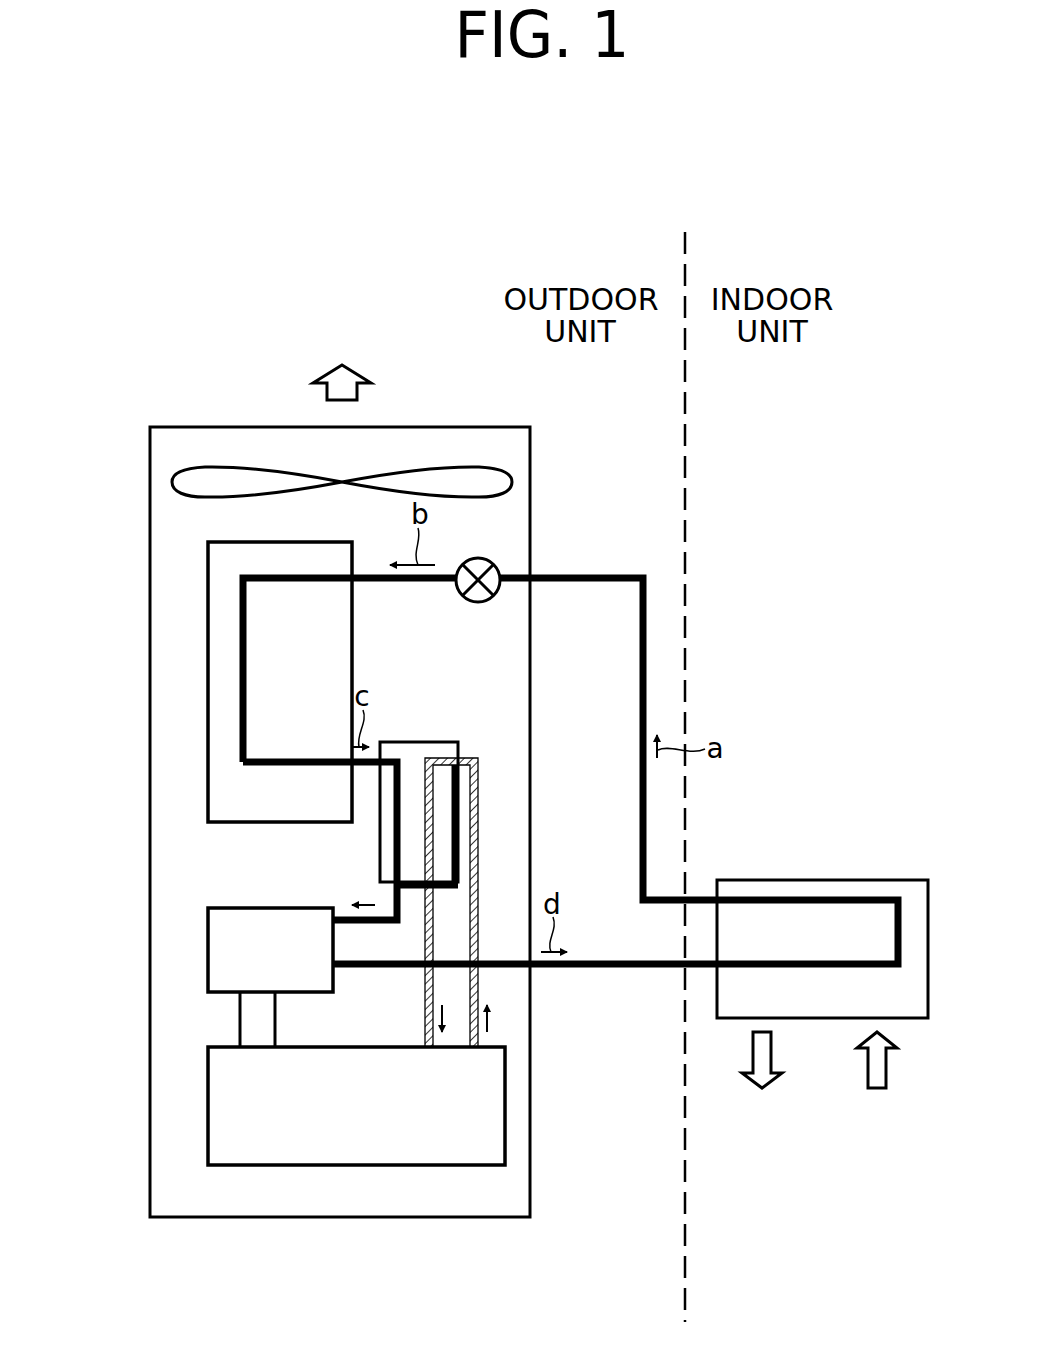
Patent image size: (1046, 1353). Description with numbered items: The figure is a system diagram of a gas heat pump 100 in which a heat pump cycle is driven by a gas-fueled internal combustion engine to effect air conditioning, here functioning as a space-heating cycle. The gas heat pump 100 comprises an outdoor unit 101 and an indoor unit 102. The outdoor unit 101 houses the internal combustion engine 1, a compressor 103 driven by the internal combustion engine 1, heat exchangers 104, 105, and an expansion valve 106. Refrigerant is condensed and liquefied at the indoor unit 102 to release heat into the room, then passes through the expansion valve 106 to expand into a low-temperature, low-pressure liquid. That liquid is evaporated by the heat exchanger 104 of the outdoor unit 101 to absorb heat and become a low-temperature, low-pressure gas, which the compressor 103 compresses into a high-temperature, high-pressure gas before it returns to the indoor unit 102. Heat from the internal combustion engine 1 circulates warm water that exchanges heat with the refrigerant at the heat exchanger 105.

The gas heat pump 100 is at (472, 222).
The outdoor unit 101 is at (204, 440).
The indoor unit 102 is at (866, 880).
The compressor 103 is at (213, 949).
The heat exchanger 104 is at (213, 793).
The heat exchanger 105 is at (436, 742).
The expansion valve 106 is at (485, 557).
The internal combustion engine 1 is at (315, 1155).